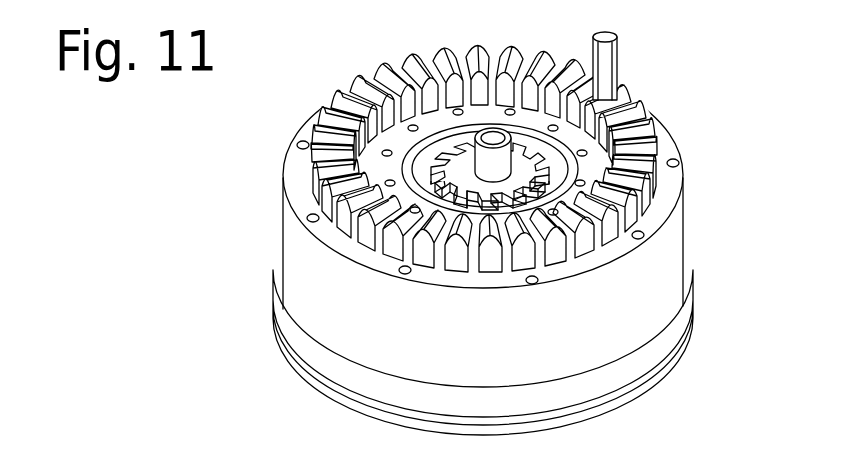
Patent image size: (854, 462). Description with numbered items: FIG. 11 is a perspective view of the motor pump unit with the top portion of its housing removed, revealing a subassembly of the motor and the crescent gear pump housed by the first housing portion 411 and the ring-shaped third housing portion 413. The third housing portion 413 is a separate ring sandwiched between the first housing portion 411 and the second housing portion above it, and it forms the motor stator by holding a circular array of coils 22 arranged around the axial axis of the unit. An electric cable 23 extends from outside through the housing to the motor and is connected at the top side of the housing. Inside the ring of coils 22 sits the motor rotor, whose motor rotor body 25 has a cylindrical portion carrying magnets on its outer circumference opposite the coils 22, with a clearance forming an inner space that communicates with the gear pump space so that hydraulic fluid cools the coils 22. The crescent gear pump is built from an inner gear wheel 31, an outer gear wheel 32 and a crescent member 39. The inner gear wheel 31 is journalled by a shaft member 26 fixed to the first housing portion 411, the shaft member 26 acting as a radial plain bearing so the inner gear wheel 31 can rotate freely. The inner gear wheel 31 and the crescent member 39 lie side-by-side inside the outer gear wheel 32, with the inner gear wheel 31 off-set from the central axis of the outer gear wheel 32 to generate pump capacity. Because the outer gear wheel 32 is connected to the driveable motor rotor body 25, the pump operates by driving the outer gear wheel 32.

The coils 22 is at (603, 202).
The electric cable 23 is at (601, 67).
The motor rotor body 25 is at (418, 120).
The shaft member 26 is at (533, 167).
The inner gear wheel 31 is at (523, 170).
The outer gear wheel 32 is at (443, 143).
The crescent member 39 is at (365, 157).
The first housing portion 411 is at (617, 368).
The third housing portion 413 is at (653, 305).